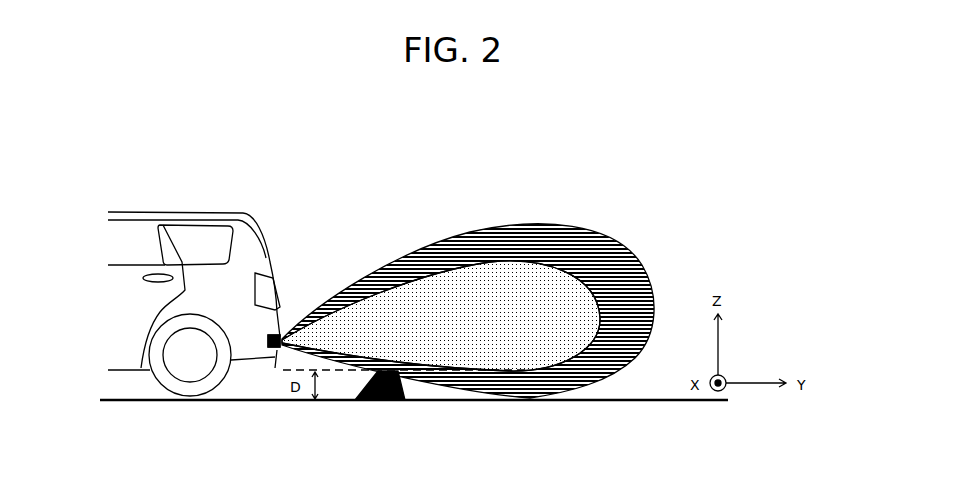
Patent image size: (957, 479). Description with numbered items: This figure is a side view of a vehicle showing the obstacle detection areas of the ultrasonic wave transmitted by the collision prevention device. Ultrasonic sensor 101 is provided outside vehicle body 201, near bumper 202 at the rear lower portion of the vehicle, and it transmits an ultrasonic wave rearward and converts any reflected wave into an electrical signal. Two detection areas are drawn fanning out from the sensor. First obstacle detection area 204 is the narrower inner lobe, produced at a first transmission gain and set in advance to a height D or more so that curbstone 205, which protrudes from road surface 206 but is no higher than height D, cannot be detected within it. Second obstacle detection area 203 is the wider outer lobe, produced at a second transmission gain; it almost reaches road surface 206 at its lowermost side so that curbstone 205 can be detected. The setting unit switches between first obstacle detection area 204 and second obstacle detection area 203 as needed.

The ultrasonic sensor 101 is at (277, 350).
The vehicle body 201 is at (197, 212).
The bumper 202 is at (278, 333).
The second obstacle detection area 203 is at (357, 268).
The first obstacle detection area 204 is at (582, 265).
The curbstone 205 is at (400, 402).
The road surface 206 is at (647, 402).